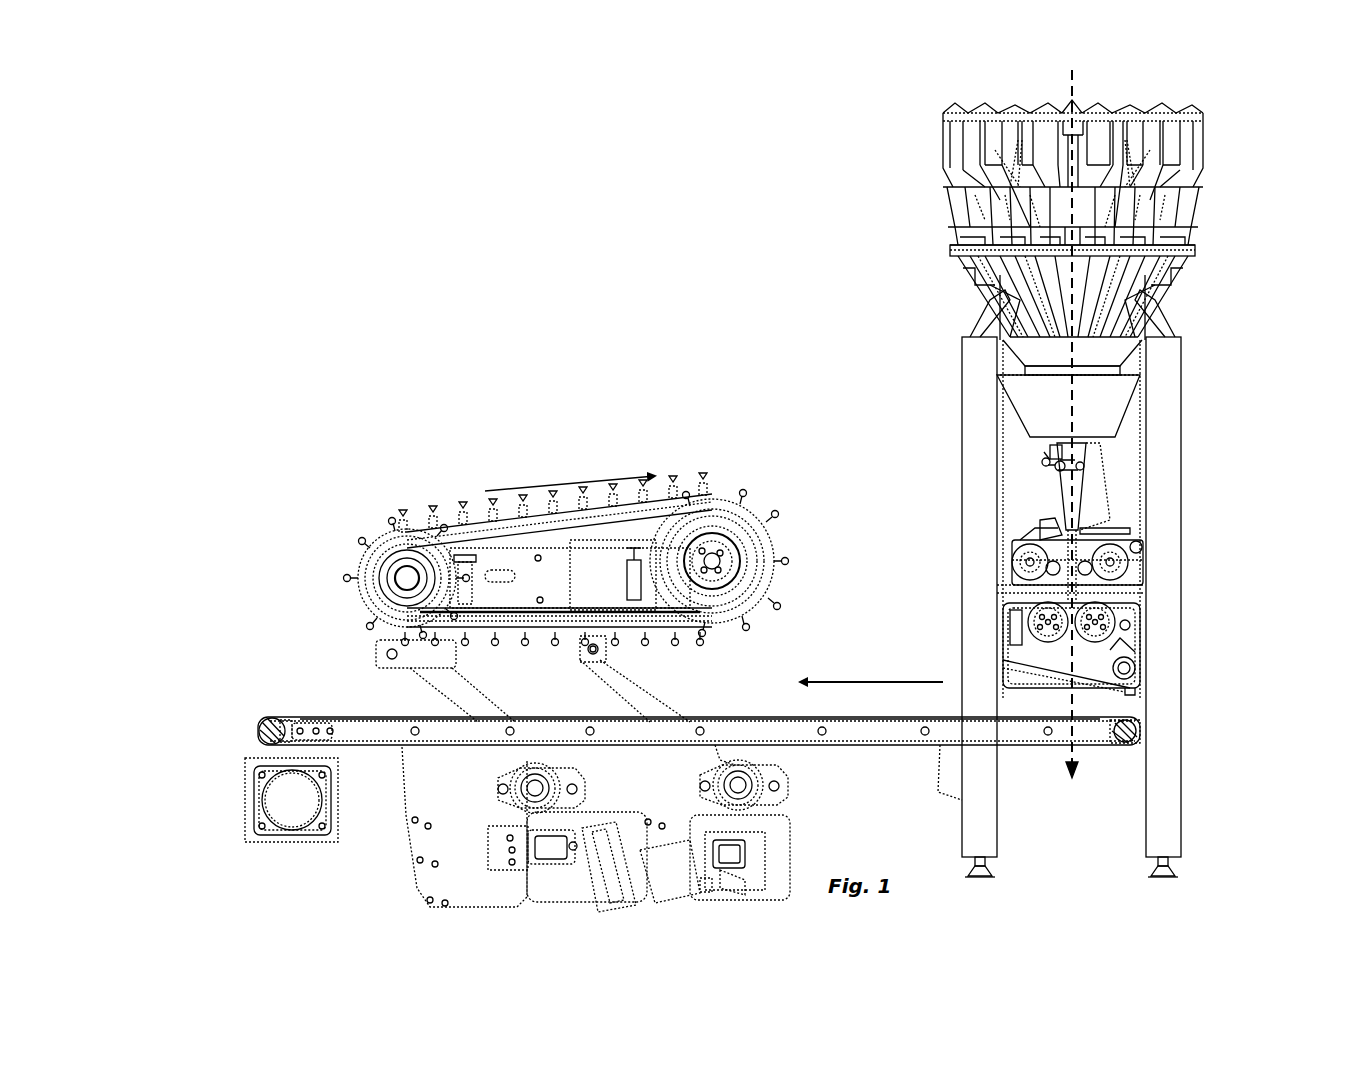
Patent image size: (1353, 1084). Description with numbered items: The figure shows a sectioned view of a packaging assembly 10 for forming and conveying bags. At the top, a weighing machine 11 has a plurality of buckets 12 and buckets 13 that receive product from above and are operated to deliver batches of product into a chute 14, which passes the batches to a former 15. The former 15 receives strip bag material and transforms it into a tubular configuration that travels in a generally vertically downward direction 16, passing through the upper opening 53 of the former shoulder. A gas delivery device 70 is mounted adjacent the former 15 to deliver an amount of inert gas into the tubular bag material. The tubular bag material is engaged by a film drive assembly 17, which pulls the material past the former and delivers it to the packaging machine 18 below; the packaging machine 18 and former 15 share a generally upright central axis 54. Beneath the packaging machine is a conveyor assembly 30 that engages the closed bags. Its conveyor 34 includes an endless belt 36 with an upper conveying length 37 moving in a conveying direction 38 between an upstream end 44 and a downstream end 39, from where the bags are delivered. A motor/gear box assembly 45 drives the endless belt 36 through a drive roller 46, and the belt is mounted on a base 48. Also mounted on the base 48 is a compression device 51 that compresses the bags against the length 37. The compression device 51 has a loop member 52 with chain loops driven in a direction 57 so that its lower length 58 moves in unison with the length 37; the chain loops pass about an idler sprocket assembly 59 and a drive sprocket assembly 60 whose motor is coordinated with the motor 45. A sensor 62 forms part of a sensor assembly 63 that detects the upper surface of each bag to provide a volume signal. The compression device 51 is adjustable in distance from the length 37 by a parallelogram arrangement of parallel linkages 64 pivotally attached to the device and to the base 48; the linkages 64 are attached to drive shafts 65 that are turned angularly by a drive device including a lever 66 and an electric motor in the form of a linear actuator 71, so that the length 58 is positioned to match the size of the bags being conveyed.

The packaging assembly 10 is at (1232, 520).
The weighing machine 11 is at (1040, 220).
The buckets 12 is at (1185, 160).
The buckets 13 is at (1188, 222).
The chute 14 is at (1108, 350).
The former 15 is at (1035, 482).
The direction 16 is at (1130, 690).
The film drive assembly 17 is at (1000, 540).
The packaging machine 18 is at (1020, 606).
The conveyor assembly 30 is at (242, 447).
The conveyor 34 is at (263, 635).
The endless belt 36 is at (307, 714).
The upper conveying length 37 is at (782, 715).
The conveying direction 38 is at (840, 682).
The downstream end 39 is at (247, 730).
The upstream end 44 is at (1143, 737).
The motor/gear box assembly 45 is at (288, 797).
The drive roller 46 is at (257, 727).
The base 48 is at (453, 796).
The compression device 51 is at (528, 529).
The loop member 52 is at (372, 548).
The upper opening 53 is at (1052, 446).
The axis 54 is at (1070, 88).
The direction 57 is at (658, 473).
The length 58 is at (568, 633).
The idler sprocket assembly 59 is at (405, 576).
The drive sprocket assembly 60 is at (712, 560).
The sensor 62 is at (634, 565).
The sensor assembly 63 is at (460, 565).
The linkages 64 is at (410, 675).
The drive shafts 65 is at (540, 788).
The lever 66 is at (722, 855).
The gas delivery device 70 is at (1046, 455).
The linear actuator 71 is at (612, 865).